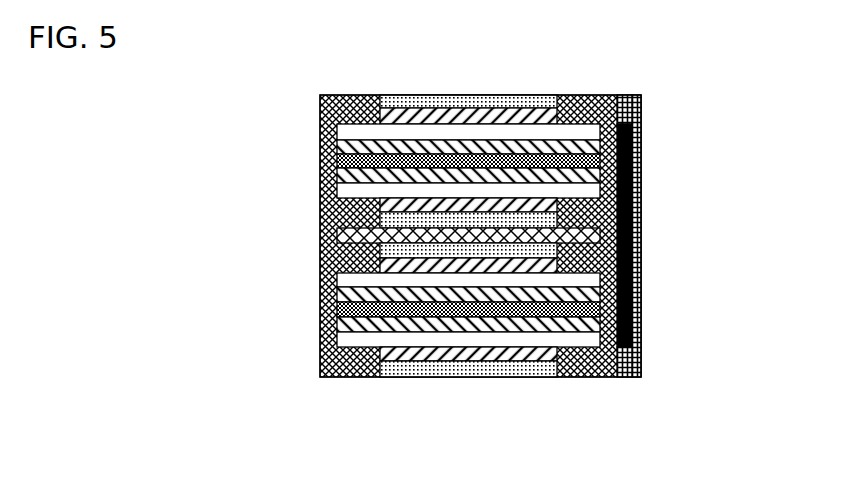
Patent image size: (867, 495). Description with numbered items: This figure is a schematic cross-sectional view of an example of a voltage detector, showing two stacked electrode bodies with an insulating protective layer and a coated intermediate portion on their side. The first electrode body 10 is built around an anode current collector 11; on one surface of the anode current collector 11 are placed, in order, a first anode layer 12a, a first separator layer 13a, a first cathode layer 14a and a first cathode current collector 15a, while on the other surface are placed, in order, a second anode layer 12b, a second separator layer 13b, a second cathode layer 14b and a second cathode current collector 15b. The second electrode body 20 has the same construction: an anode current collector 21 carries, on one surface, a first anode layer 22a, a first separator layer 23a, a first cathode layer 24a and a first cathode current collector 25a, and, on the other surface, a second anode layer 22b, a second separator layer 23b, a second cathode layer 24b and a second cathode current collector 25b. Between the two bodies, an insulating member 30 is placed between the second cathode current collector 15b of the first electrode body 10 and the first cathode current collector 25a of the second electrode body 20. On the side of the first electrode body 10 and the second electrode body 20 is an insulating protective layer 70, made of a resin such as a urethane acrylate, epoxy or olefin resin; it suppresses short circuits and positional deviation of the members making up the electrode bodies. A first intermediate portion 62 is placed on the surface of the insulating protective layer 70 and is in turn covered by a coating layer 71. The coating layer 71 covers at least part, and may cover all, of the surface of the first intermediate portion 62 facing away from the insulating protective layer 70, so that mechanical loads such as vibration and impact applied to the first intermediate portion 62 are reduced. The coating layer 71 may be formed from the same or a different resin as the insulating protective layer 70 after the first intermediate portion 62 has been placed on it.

The first electrode body 10 is at (385, 162).
The anode current collector 11 is at (337, 163).
The first anode layer 12a is at (347, 148).
The second anode layer 12b is at (347, 178).
The first separator layer 13a is at (320, 137).
The second separator layer 13b is at (320, 194).
The first cathode layer 14a is at (398, 118).
The second cathode layer 14b is at (398, 207).
The first cathode current collector 15a is at (320, 103).
The second cathode current collector 15b is at (387, 222).
The second electrode body 20 is at (385, 311).
The anode current collector 21 is at (337, 311).
The first anode layer 22a is at (347, 296).
The second anode layer 22b is at (347, 325).
The first separator layer 23a is at (320, 284).
The second separator layer 23b is at (320, 341).
The first cathode layer 24a is at (398, 265).
The second cathode layer 24b is at (398, 354).
The first cathode current collector 25a is at (320, 253).
The second cathode current collector 25b is at (387, 370).
The insulating member 30 is at (320, 237).
The first intermediate portion 62 is at (641, 232).
The insulating protective layer 70 is at (634, 108).
The coating layer 71 is at (632, 135).